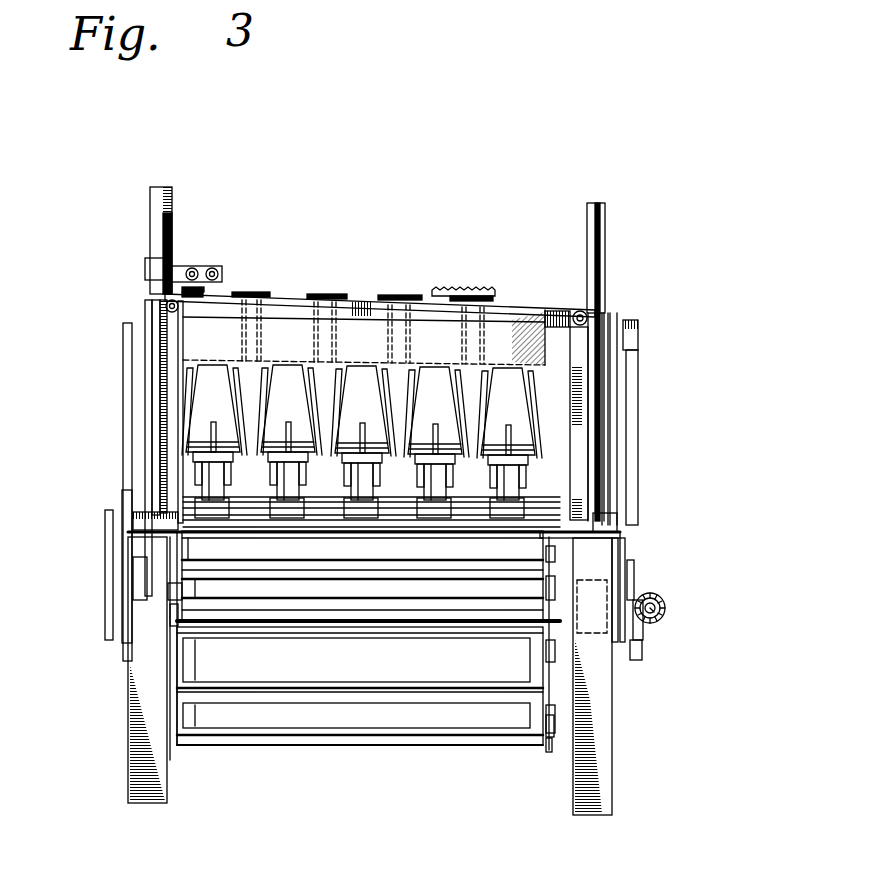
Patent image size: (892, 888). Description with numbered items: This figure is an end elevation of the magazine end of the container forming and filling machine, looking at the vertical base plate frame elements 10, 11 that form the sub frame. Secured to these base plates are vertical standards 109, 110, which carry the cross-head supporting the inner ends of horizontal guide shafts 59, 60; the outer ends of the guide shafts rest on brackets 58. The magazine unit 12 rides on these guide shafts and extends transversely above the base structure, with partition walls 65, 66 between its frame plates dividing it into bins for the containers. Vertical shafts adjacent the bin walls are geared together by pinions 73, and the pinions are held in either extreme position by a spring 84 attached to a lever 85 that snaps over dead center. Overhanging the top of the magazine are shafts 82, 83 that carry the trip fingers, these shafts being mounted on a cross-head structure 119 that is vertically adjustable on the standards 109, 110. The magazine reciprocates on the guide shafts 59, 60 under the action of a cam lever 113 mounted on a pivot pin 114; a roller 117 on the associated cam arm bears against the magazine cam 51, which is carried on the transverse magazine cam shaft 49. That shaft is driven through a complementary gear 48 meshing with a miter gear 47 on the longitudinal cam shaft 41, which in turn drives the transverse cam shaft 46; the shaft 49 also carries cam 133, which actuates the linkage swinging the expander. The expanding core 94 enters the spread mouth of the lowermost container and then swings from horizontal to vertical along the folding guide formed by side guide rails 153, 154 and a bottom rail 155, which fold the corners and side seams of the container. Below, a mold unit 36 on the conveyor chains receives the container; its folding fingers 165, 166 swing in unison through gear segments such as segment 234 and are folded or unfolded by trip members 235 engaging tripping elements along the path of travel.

The vertical base plate frame element 10 is at (135, 722).
The vertical base plate frame element 11 is at (592, 802).
The magazine unit 12 is at (521, 309).
The mold unit 36 is at (289, 753).
The longitudinally extending cam shaft 41 is at (657, 616).
The transverse cam shaft 46 is at (172, 626).
The miter gear 47 is at (666, 608).
The complementary gear 48 is at (658, 597).
The transverse magazine cam shaft 49 is at (170, 598).
The magazine cam 51 is at (345, 655).
The bracket 58 is at (574, 482).
The horizontal guide shaft 59 is at (592, 312).
The horizontal guide shaft 60 is at (166, 300).
The partition wall 65 is at (260, 320).
The partition wall 66 is at (311, 320).
The pinion 73 is at (401, 295).
The shaft 82 is at (214, 268).
The shaft 83 is at (192, 267).
The spring 84 is at (456, 289).
The lever 85 is at (494, 294).
The expanding core 94 is at (196, 476).
The vertical standard 109 is at (606, 224).
The vertical standard 110 is at (160, 208).
The cam lever 113 is at (148, 374).
The pivot pin 114 is at (582, 536).
The roller 117 is at (634, 578).
The cross-head structure 119 is at (175, 270).
The cam 133 is at (642, 625).
The guide rail 153 is at (240, 425).
The guide rail 154 is at (195, 368).
The bottom rail 155 is at (205, 405).
The folding finger 165 is at (400, 582).
The folding finger 166 is at (288, 612).
The gear segment 234 is at (548, 760).
The trip member 235 is at (558, 740).